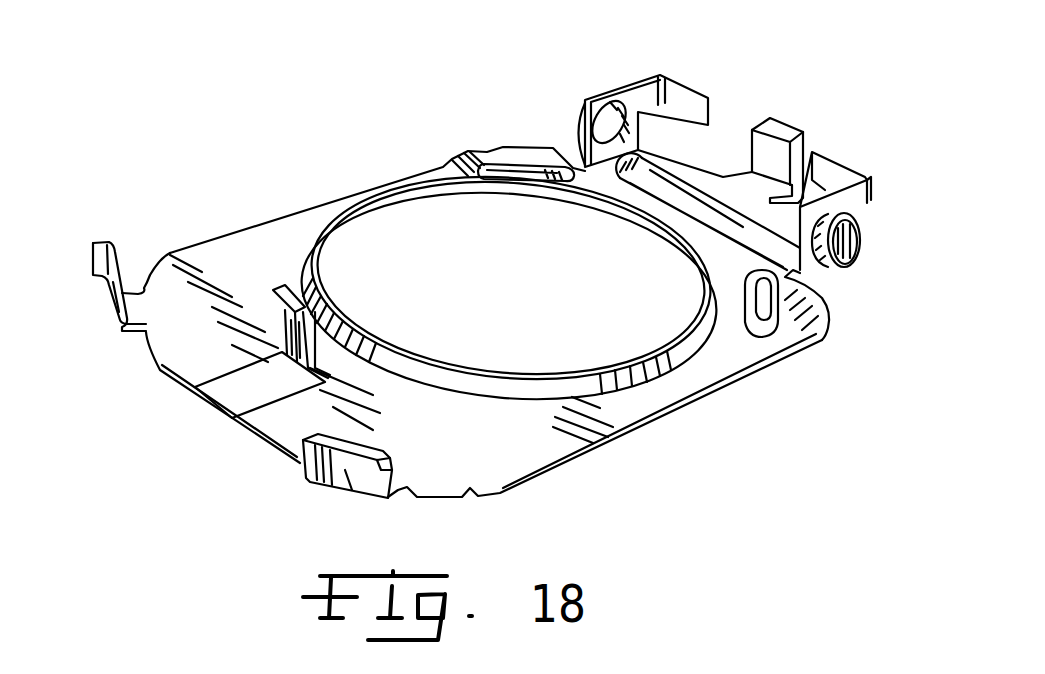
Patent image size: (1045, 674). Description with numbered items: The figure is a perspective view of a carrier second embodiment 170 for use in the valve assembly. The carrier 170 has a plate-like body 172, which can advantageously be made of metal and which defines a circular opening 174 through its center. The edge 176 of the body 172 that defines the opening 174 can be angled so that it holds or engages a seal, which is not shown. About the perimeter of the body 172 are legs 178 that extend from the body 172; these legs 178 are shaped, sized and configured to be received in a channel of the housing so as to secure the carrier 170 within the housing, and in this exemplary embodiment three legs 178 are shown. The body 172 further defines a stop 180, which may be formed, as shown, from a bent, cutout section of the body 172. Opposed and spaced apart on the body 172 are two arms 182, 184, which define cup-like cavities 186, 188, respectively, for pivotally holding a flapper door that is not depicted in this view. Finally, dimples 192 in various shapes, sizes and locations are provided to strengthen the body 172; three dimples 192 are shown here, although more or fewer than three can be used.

The carrier second embodiment 170 is at (316, 130).
The plate-like body 172 is at (227, 250).
The circular opening 174 is at (424, 222).
The edge 176 is at (350, 210).
The legs 178 is at (112, 293).
The stop 180 is at (282, 300).
The arm 182 is at (658, 78).
The arm 184 is at (850, 150).
The cup-like cavity 186 is at (604, 100).
The cup-like cavity 188 is at (863, 250).
The dimples 192 is at (535, 160).